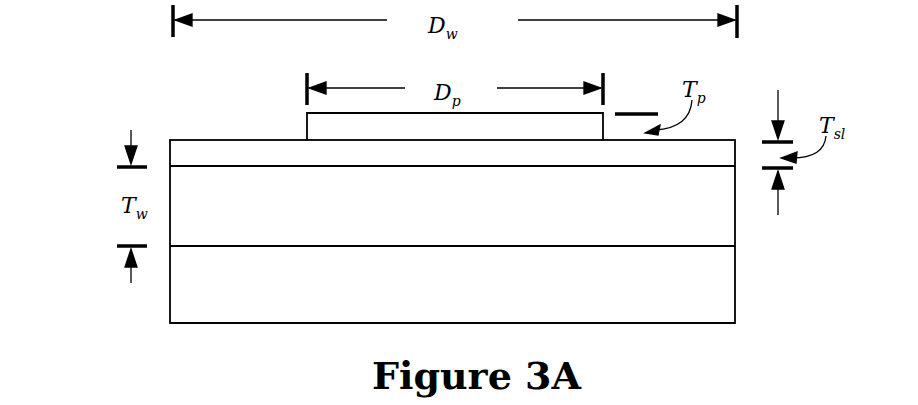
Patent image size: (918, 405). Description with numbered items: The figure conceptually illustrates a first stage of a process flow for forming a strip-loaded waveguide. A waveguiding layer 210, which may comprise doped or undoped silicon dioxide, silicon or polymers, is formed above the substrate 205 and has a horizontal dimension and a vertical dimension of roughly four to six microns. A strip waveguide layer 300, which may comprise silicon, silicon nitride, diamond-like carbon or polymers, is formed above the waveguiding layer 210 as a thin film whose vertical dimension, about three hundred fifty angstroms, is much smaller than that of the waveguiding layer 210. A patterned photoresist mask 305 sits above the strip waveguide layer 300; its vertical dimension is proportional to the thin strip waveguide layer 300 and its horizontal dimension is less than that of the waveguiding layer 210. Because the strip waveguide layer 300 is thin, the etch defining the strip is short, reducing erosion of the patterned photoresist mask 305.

The strip waveguide layer 300 is at (200, 140).
The patterned photoresist mask 305 is at (307, 133).
The waveguiding layer 210 is at (448, 219).
The substrate 205 is at (443, 300).